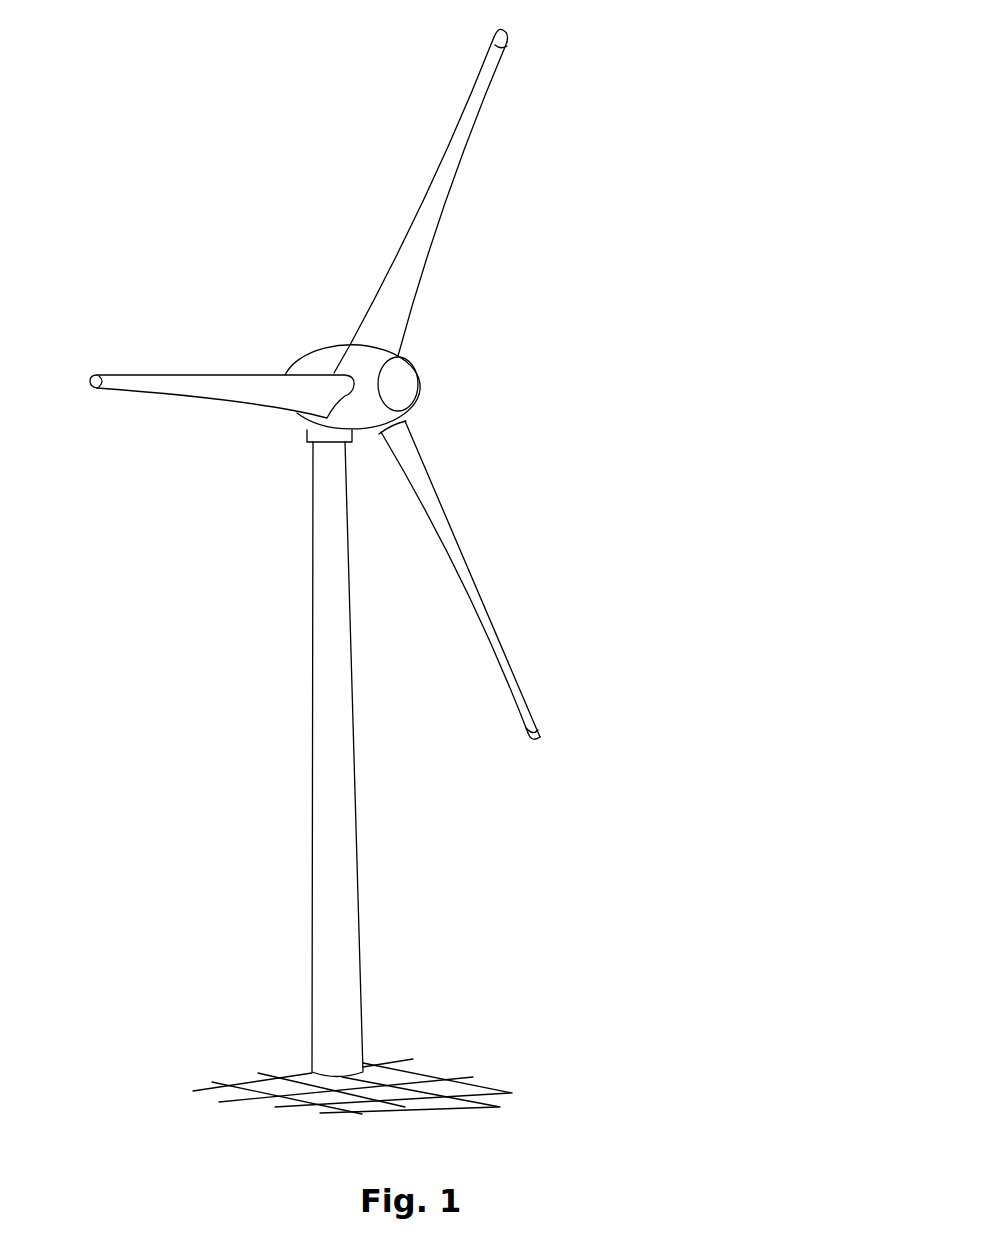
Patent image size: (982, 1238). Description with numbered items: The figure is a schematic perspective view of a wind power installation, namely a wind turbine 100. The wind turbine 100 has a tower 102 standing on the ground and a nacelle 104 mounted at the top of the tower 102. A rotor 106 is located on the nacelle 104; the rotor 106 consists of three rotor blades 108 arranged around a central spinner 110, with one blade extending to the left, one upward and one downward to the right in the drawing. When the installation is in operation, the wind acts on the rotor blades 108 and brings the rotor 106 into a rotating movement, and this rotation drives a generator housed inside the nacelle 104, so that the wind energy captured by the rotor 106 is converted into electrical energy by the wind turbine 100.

The wind turbine 100 is at (375, 571).
The tower 102 is at (340, 853).
The nacelle 104 is at (323, 360).
The rotor 106 is at (375, 384).
The rotor blades 108 is at (455, 155).
The spinner 110 is at (407, 383).